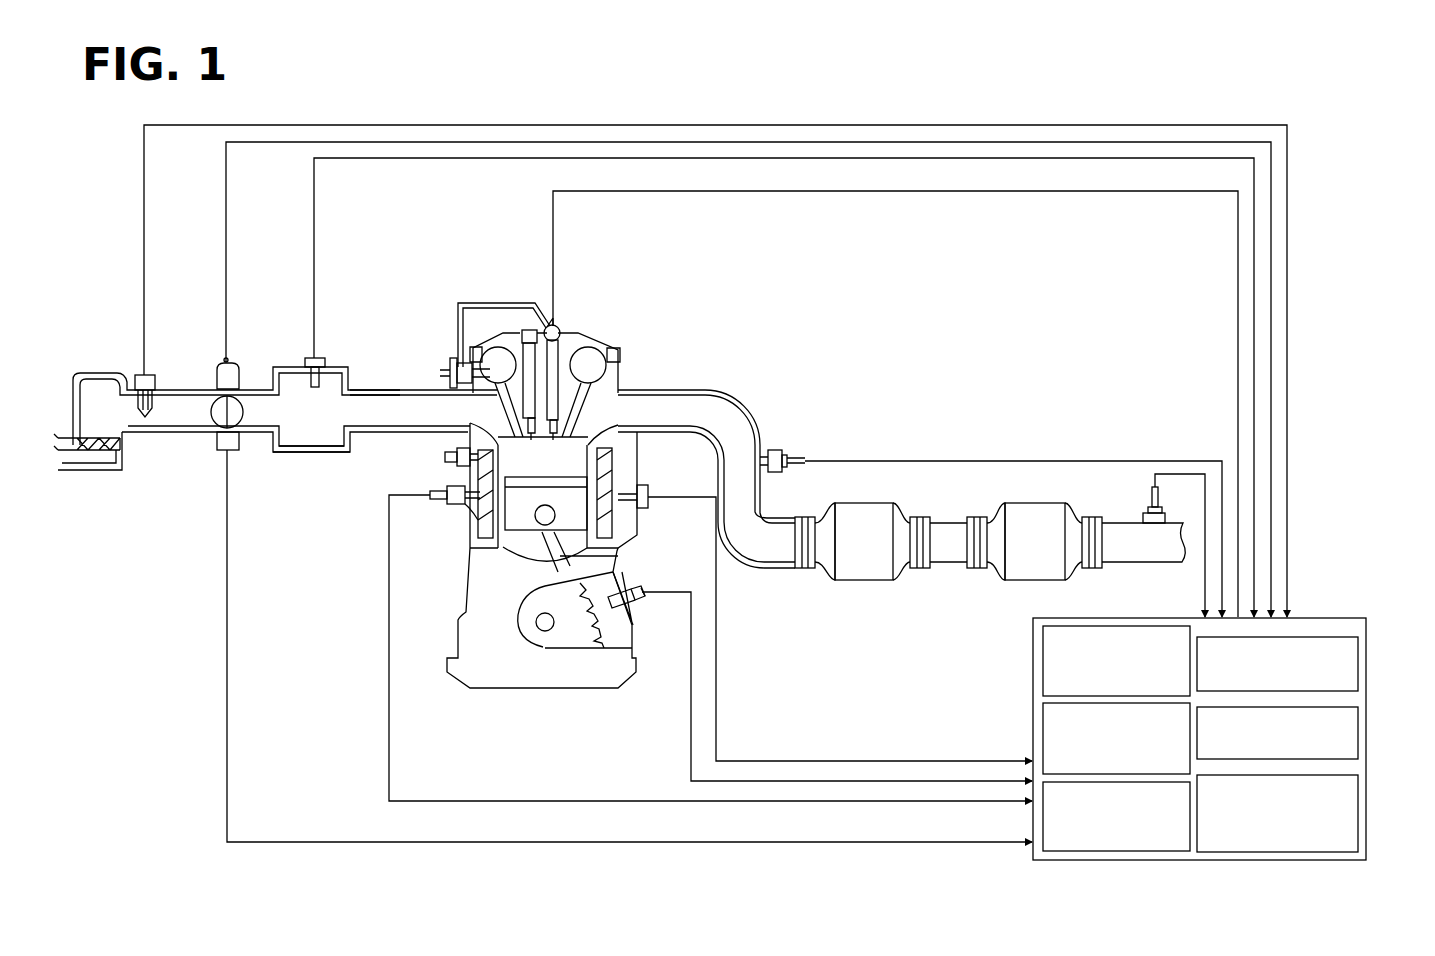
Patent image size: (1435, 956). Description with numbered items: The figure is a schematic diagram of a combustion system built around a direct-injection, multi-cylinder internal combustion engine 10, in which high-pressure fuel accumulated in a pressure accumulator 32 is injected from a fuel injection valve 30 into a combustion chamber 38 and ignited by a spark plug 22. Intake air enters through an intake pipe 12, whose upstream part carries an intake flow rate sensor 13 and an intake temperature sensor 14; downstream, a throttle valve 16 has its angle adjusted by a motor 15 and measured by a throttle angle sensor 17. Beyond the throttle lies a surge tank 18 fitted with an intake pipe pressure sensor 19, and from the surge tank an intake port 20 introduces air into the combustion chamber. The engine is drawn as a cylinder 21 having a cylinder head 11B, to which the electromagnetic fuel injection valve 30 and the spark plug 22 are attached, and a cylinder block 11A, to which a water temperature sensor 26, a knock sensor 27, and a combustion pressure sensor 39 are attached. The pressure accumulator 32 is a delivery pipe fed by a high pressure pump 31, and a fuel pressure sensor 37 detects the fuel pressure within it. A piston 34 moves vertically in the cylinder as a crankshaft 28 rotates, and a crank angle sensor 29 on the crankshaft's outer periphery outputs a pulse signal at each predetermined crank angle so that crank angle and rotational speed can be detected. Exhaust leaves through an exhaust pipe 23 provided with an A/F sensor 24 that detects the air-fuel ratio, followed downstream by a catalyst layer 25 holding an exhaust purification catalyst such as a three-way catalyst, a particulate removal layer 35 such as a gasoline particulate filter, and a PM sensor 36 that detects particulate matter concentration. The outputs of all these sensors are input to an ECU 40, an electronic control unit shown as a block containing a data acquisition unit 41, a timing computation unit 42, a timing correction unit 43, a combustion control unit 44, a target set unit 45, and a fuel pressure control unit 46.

The internal combustion engine 10 is at (636, 347).
The cylinder block 11A is at (457, 611).
The cylinder head 11B is at (585, 333).
The intake pipe 12 is at (178, 388).
The intake flow rate sensor 13 is at (126, 378).
The intake temperature sensor 14 is at (138, 377).
The motor 15 is at (222, 356).
The throttle valve 16 is at (218, 410).
The throttle angle sensor 17 is at (237, 452).
The surge tank 18 is at (318, 454).
The intake pipe pressure sensor 19 is at (311, 356).
The intake port 20 is at (378, 388).
The cylinder 21 is at (617, 470).
The spark plug 22 is at (524, 330).
The exhaust pipe 23 is at (707, 390).
The A/F sensor 24 is at (779, 450).
The catalyst layer 25 is at (853, 580).
The water temperature sensor 26 is at (468, 508).
The knock sensor 27 is at (648, 503).
The crankshaft 28 is at (548, 632).
The crank angle sensor 29 is at (645, 598).
The fuel injection valve 30 is at (557, 352).
The high pressure pump 31 is at (452, 370).
The pressure accumulator 32 is at (556, 328).
The piston 34 is at (620, 573).
The particulate removal layer 35 is at (1020, 580).
The PM sensor 36 is at (1149, 497).
The fuel pressure sensor 37 is at (550, 329).
The combustion chamber 38 is at (460, 485).
The combustion pressure sensor 39 is at (444, 448).
The ECU 40 is at (1367, 631).
The data acquisition unit 41 is at (1042, 668).
The timing computation unit 42 is at (1042, 731).
The timing correction unit 43 is at (1148, 852).
The combustion control unit 44 is at (1359, 672).
The target set unit 45 is at (1359, 740).
The fuel pressure control unit 46 is at (1359, 812).